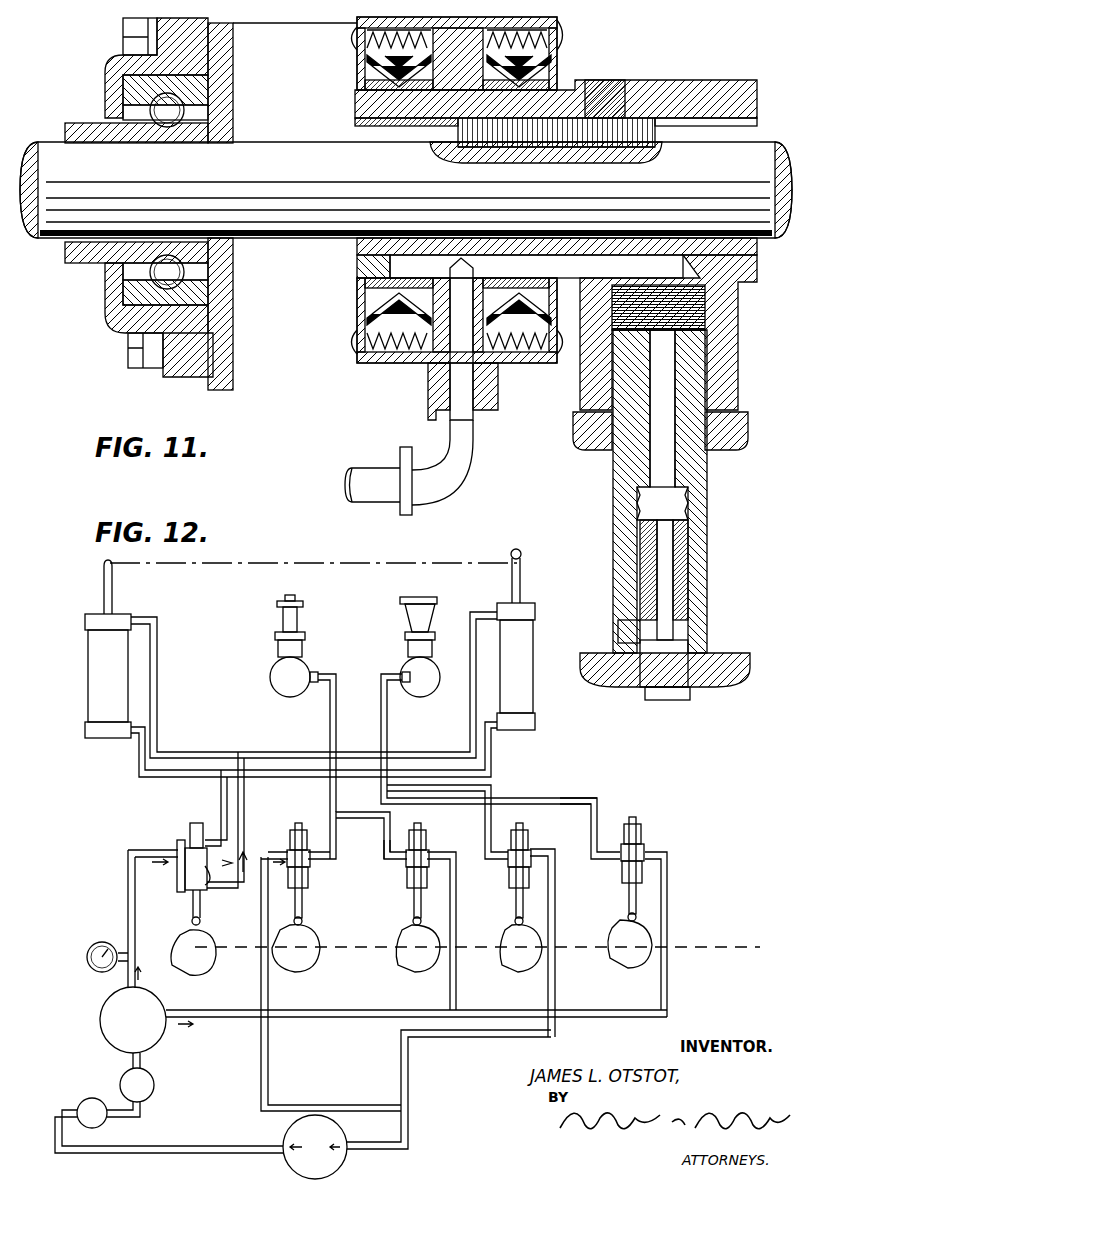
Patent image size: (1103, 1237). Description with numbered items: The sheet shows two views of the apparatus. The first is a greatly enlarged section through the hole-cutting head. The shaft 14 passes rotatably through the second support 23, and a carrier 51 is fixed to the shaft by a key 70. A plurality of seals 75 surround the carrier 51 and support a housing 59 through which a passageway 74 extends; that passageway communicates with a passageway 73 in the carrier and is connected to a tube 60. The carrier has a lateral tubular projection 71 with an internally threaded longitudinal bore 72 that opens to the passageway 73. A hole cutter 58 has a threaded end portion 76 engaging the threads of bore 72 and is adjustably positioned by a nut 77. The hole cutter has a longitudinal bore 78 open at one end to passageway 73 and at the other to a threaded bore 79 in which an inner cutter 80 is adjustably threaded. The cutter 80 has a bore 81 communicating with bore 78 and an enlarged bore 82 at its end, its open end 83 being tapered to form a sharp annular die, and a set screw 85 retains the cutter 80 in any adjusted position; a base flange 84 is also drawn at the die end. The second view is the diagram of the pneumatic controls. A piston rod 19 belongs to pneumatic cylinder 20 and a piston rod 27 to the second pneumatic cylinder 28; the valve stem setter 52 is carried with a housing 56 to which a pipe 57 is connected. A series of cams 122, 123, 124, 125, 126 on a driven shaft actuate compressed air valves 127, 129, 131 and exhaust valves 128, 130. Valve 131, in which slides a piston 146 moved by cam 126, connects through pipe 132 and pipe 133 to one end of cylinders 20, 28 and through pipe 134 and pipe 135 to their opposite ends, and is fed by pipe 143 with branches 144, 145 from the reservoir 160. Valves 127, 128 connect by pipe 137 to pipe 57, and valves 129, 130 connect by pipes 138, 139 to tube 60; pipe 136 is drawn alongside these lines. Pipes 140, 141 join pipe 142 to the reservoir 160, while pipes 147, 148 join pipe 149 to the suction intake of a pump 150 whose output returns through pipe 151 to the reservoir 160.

In FIG. 11, the shaft 14 is at (752, 150).
In FIG. 11, the second support 23 is at (357, 262).
In FIG. 11, the carrier 51 is at (697, 97).
In FIG. 11, the housing 59 is at (560, 23).
In FIG. 12, the housing 59 is at (270, 678).
In FIG. 11, the seals 75 is at (556, 60).
In FIG. 11, the key 70 is at (628, 118).
In FIG. 11, the passageway 73 is at (647, 262).
In FIG. 11, the lateral tubular projection 71 is at (715, 365).
In FIG. 11, the internally threaded longitudinal bore 72 is at (700, 298).
In FIG. 11, the hole cutter 58 is at (712, 536).
In FIG. 12, the hole cutter 58 is at (282, 618).
In FIG. 11, the longitudinal bore 78 is at (668, 458).
In FIG. 11, the threaded bore 79 is at (648, 510).
In FIG. 11, the bore 81 is at (690, 566).
In FIG. 11, the cutter 80 is at (692, 606).
In FIG. 11, the set screw 85 is at (620, 634).
In FIG. 11, the enlarged bore 82 is at (690, 646).
In FIG. 11, the threaded end portion 76 is at (700, 399).
In FIG. 11, the nut 77 is at (735, 431).
In FIG. 11, the base flange 84 is at (735, 681).
In FIG. 11, the cutter open end 83 is at (678, 701).
In FIG. 11, the passageway 74 is at (490, 373).
In FIG. 11, the tube 60 is at (476, 463).
In FIG. 12, the tube 60 is at (322, 709).
In FIG. 12, the piston rod 19 is at (102, 590).
In FIG. 12, the pneumatic cylinder 20 is at (98, 677).
In FIG. 12, the piston rod 27 is at (520, 593).
In FIG. 12, the second pneumatic cylinder 28 is at (527, 686).
In FIG. 12, the valve stem setter 52 is at (405, 605).
In FIG. 12, the housing 56 is at (425, 688).
In FIG. 12, the pipe 57 is at (388, 726).
In FIG. 12, the cam 122 is at (660, 940).
In FIG. 12, the cam 123 is at (545, 943).
In FIG. 12, the cam 124 is at (445, 946).
In FIG. 12, the cam 125 is at (310, 947).
In FIG. 12, the cam 126 is at (200, 949).
In FIG. 12, the compressed air valve 127 is at (645, 836).
In FIG. 12, the exhaust valve 128 is at (532, 851).
In FIG. 12, the compressed air valve 129 is at (428, 851).
In FIG. 12, the exhaust valve 130 is at (288, 846).
In FIG. 12, the compressed air valve 131 is at (190, 826).
In FIG. 12, the pipe 132 is at (245, 813).
In FIG. 12, the pipe 133 is at (188, 758).
In FIG. 12, the pipe 134 is at (221, 801).
In FIG. 12, the pipe 135 is at (265, 772).
In FIG. 12, the conduit 136 is at (580, 800).
In FIG. 12, the pipe 137 is at (492, 799).
In FIG. 12, the pipe 138 is at (384, 856).
In FIG. 12, the pipe 139 is at (337, 856).
In FIG. 12, the pipe 140 is at (670, 1004).
In FIG. 12, the pipe 141 is at (460, 1011).
In FIG. 12, the pipe 142 is at (330, 1015).
In FIG. 12, the pipe 143 is at (127, 900).
In FIG. 12, the branch 144 is at (178, 845).
In FIG. 12, the branch 145 is at (176, 884).
In FIG. 12, the piston 146 is at (208, 869).
In FIG. 12, the pipe 147 is at (563, 1006).
In FIG. 12, the pipe 148 is at (270, 1066).
In FIG. 12, the pipe 149 is at (405, 1143).
In FIG. 12, the pump 150 is at (347, 1166).
In FIG. 12, the pipe 151 is at (147, 1158).
In FIG. 12, the reservoir 160 is at (110, 1036).